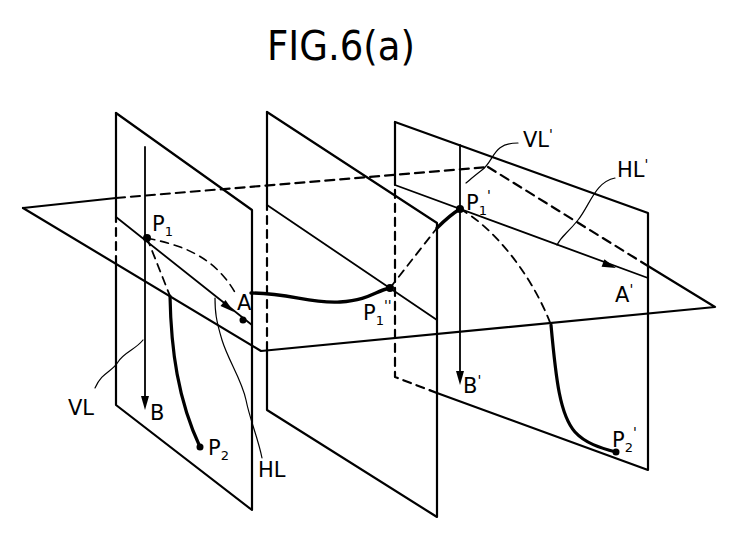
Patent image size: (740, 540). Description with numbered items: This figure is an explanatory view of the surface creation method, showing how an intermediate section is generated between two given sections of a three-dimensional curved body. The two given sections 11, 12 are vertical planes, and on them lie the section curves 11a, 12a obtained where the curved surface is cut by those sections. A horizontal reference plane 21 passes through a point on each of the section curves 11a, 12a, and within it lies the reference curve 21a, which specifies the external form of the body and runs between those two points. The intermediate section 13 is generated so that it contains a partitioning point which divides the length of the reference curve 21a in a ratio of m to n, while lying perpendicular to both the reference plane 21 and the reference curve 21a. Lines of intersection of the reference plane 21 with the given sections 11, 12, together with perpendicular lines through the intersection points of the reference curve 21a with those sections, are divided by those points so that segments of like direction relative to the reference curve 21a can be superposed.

The reference plane 21 is at (60, 205).
The reference curve 21a is at (282, 288).
The given section 11 is at (150, 442).
The section curve 11a is at (187, 433).
The intermediate section 13 is at (290, 126).
The given section 12 is at (647, 222).
The section curve 12a is at (568, 440).